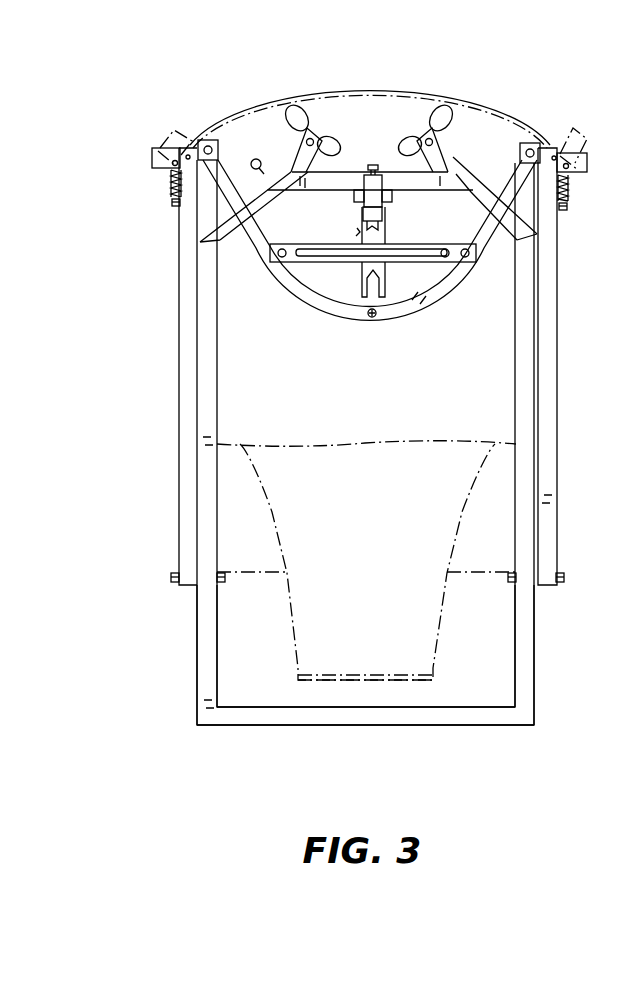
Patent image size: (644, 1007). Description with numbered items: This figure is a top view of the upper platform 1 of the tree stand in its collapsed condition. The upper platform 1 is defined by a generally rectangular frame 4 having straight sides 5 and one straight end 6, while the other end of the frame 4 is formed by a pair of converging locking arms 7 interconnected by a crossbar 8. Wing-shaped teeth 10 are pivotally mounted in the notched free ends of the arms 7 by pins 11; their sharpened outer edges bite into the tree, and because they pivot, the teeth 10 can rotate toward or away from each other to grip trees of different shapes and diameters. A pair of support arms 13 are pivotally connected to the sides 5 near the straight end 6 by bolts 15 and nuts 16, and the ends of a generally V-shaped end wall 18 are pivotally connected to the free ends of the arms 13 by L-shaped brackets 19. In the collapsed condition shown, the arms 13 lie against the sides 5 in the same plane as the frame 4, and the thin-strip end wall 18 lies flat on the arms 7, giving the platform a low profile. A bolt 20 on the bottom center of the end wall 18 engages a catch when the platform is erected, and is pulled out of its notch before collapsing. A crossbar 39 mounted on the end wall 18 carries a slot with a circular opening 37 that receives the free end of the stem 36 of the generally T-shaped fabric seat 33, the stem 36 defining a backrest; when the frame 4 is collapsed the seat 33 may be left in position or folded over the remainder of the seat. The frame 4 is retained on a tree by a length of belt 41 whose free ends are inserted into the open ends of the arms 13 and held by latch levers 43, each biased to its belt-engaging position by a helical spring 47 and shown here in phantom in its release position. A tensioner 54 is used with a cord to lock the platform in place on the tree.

The upper platform 1 is at (186, 755).
The frame 4 is at (534, 726).
The sides 5 is at (196, 650).
The straight end 6 is at (450, 722).
The locking arms 7 is at (222, 210).
The crossbar 8 is at (455, 152).
The wing-shaped teeth 10 is at (306, 112).
The pins 11 is at (290, 142).
The support arms 13 is at (179, 440).
The bolts 15 is at (171, 578).
The nuts 16 is at (225, 581).
The end wall 18 is at (413, 310).
The L-shaped brackets 19 is at (208, 140).
The bolt 20 is at (374, 318).
The fabric seat 33 is at (246, 440).
The stem 36 is at (343, 684).
The circular opening 37 is at (447, 257).
The crossbar 39 is at (310, 262).
The belt 41 is at (326, 88).
The levers 43 is at (153, 160).
The helical spring 47 is at (171, 185).
The tensioner 54 is at (348, 268).